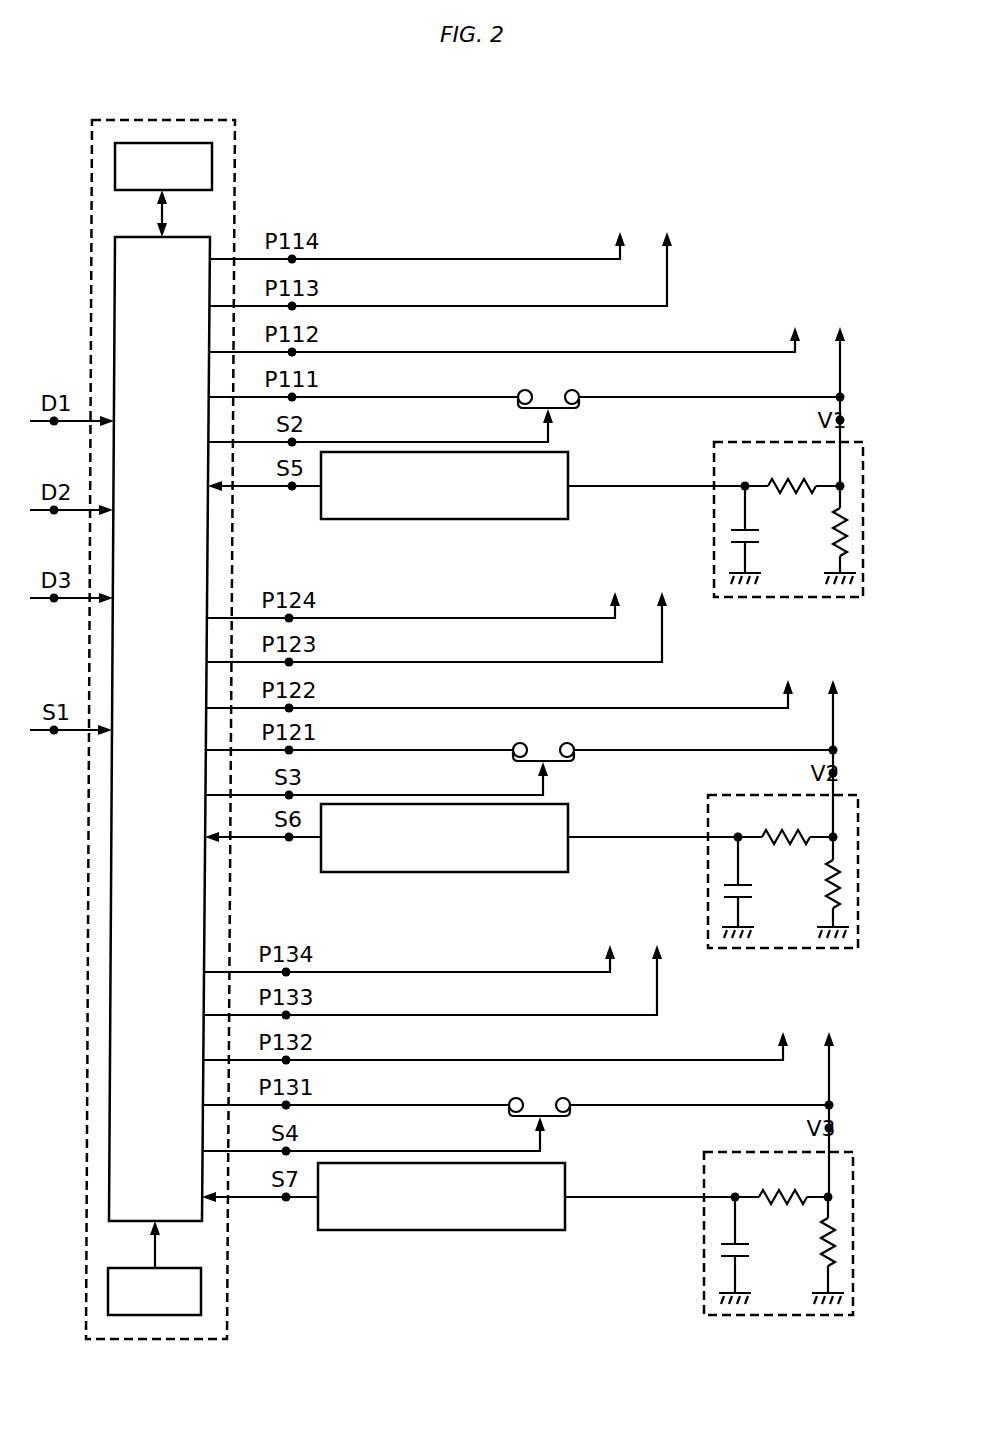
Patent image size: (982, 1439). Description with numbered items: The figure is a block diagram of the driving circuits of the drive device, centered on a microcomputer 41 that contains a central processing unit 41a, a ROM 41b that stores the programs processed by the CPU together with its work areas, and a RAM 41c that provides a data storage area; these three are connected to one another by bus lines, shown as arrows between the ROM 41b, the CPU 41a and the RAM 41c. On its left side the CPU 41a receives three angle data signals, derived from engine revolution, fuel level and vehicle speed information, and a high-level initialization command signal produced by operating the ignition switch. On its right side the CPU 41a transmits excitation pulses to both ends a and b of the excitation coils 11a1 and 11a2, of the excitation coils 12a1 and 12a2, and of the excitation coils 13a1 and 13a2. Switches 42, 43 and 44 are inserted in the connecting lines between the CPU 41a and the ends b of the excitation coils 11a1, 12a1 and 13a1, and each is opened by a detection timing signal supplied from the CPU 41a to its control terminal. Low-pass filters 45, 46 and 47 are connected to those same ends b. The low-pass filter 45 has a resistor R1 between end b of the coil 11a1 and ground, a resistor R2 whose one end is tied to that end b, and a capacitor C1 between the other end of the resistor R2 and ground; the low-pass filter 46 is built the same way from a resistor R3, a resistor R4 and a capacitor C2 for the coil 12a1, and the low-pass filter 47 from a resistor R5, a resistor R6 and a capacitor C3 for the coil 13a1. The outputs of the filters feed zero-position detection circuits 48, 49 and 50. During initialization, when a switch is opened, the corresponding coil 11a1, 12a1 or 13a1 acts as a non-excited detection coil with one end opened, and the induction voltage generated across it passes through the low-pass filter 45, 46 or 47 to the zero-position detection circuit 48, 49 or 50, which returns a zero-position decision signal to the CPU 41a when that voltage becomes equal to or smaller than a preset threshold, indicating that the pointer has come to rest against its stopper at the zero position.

The microcomputer 41 is at (154, 122).
The central processing unit (CPU) 41a is at (190, 237).
The ROM 41b is at (201, 1292).
The RAM 41c is at (212, 165).
The switch 42 is at (550, 394).
The switch 43 is at (541, 747).
The switch 44 is at (540, 1103).
The low-pass filter 45 is at (715, 519).
The low-pass filter 46 is at (713, 871).
The low-pass filter 47 is at (709, 1233).
The zero-position detection circuit 48 is at (444, 513).
The zero-position detection circuit 49 is at (444, 865).
The zero-position detection circuit 50 is at (441, 1225).
The excitation coil 11a1 is at (787, 299).
The excitation coil 11a2 is at (612, 203).
The excitation coil 12a1 is at (780, 654).
The excitation coil 12a2 is at (607, 563).
The excitation coil 13a1 is at (775, 1006).
The excitation coil 13a2 is at (602, 917).
The resistor R1 is at (832, 544).
The resistor R2 is at (785, 482).
The resistor R3 is at (824, 906).
The resistor R4 is at (778, 837).
The resistor R5 is at (822, 1256).
The resistor R6 is at (778, 1195).
The capacitor C1 is at (763, 536).
The capacitor C2 is at (757, 898).
The capacitor C3 is at (757, 1249).